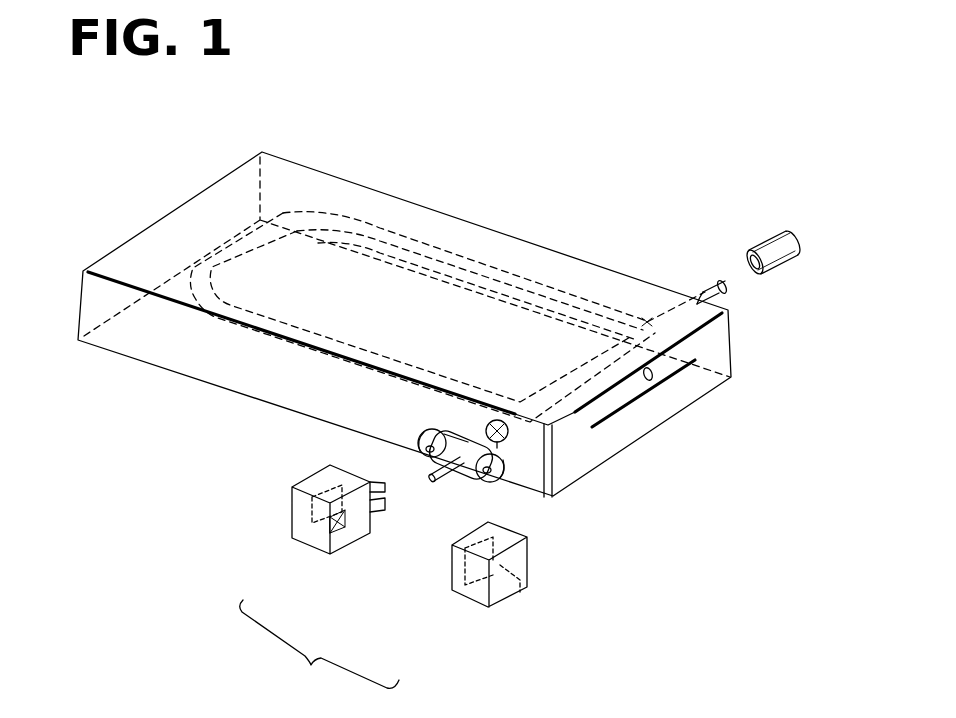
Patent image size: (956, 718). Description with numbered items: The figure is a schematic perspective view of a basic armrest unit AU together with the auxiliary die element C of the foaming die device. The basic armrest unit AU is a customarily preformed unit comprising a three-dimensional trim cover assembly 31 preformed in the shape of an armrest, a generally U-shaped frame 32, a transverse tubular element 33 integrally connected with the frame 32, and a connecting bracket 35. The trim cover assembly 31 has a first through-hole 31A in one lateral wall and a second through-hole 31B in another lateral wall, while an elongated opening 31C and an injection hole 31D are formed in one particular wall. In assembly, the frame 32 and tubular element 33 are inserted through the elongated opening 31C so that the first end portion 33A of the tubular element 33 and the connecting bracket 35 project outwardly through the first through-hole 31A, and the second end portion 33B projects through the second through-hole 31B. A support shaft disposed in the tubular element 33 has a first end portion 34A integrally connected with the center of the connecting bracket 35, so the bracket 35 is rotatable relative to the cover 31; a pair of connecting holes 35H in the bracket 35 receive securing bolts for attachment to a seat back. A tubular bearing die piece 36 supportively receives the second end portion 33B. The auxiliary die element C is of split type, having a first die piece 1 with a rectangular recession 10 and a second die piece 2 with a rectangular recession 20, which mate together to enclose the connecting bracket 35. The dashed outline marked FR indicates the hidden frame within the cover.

The first die piece 1 is at (305, 537).
The rectangular recession 10 is at (357, 533).
The second die piece 2 is at (460, 587).
The rectangular recession 20 is at (522, 592).
The trim cover assembly 31 is at (325, 195).
The first through-hole 31A is at (450, 393).
The second through-hole 31B is at (665, 318).
The elongated opening 31C is at (633, 403).
The injection hole 31D is at (655, 375).
The generally U-shaped frame 32 is at (420, 240).
The transverse tubular element 33 is at (650, 322).
The first end portion 33A is at (510, 437).
The second end portion 33B is at (729, 292).
The first end portion 34A is at (443, 487).
The connecting bracket 35 is at (470, 483).
The connecting holes 35H is at (418, 445).
The tubular bearing die piece 36 is at (767, 238).
The basic armrest unit AU is at (434, 150).
The flow channel FR is at (518, 250).
The auxiliary die element C is at (319, 650).